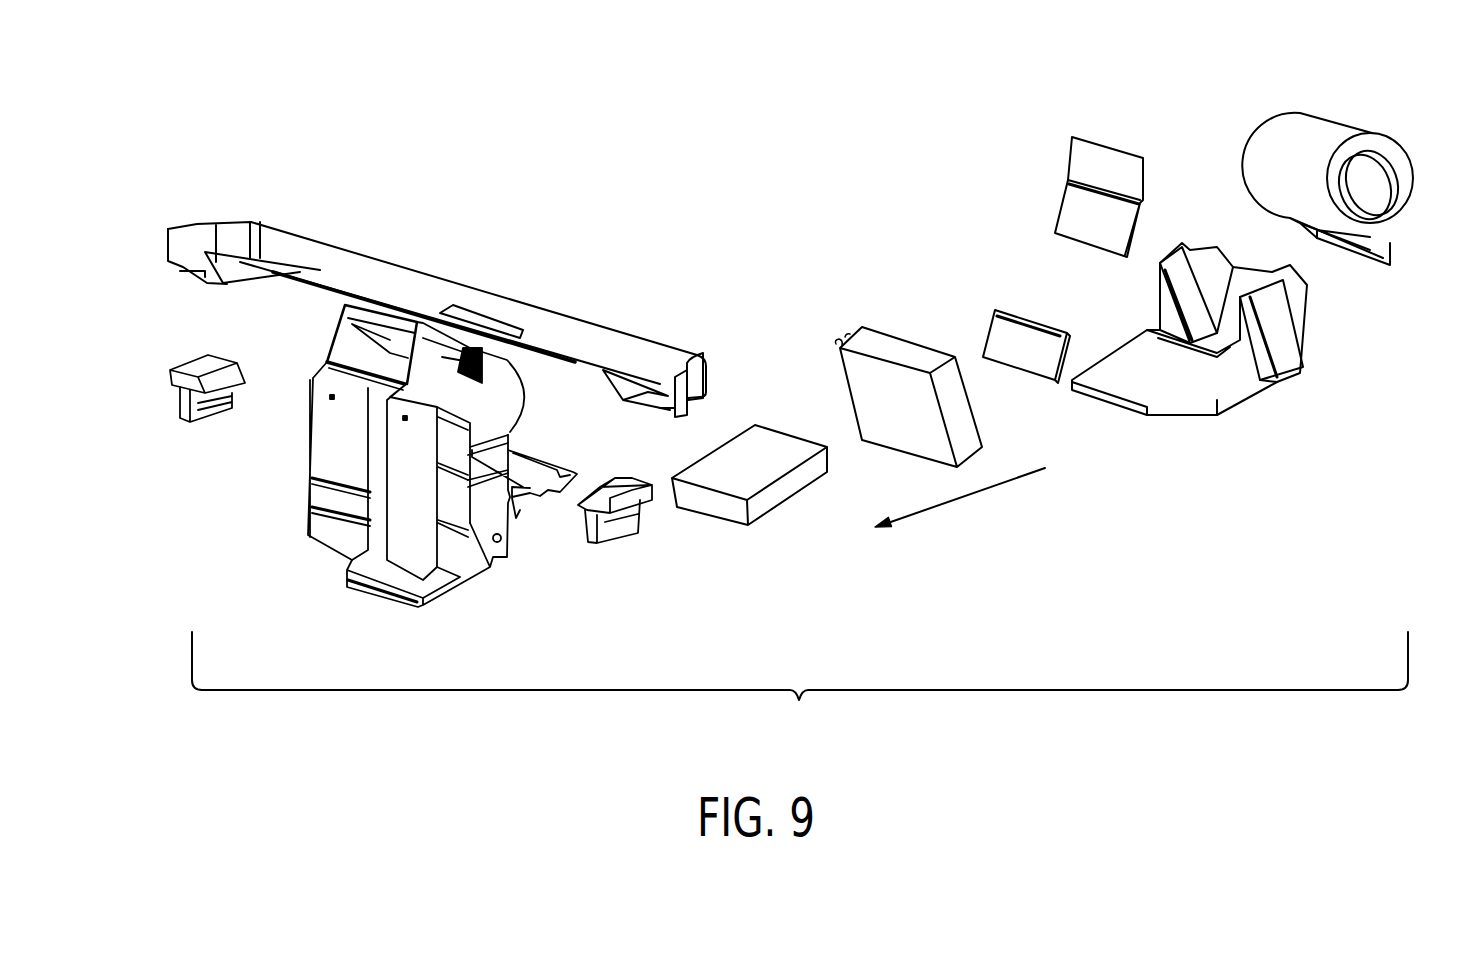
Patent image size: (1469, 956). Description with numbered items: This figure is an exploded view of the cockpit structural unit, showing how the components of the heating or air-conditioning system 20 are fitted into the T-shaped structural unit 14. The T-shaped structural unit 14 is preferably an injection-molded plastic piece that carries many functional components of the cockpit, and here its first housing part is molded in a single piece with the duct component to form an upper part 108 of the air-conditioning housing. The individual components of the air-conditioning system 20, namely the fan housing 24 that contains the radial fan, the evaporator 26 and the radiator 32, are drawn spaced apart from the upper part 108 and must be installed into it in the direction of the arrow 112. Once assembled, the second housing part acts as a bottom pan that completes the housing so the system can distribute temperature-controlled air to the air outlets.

The T-shaped structural unit 14 is at (628, 202).
The heating or air-conditioning system 20 is at (895, 300).
The fan housing 24 is at (1385, 228).
The evaporator 26 is at (953, 412).
The radiator 32 is at (768, 498).
The upper part of the housing 108 is at (493, 415).
The arrow 112 is at (990, 490).